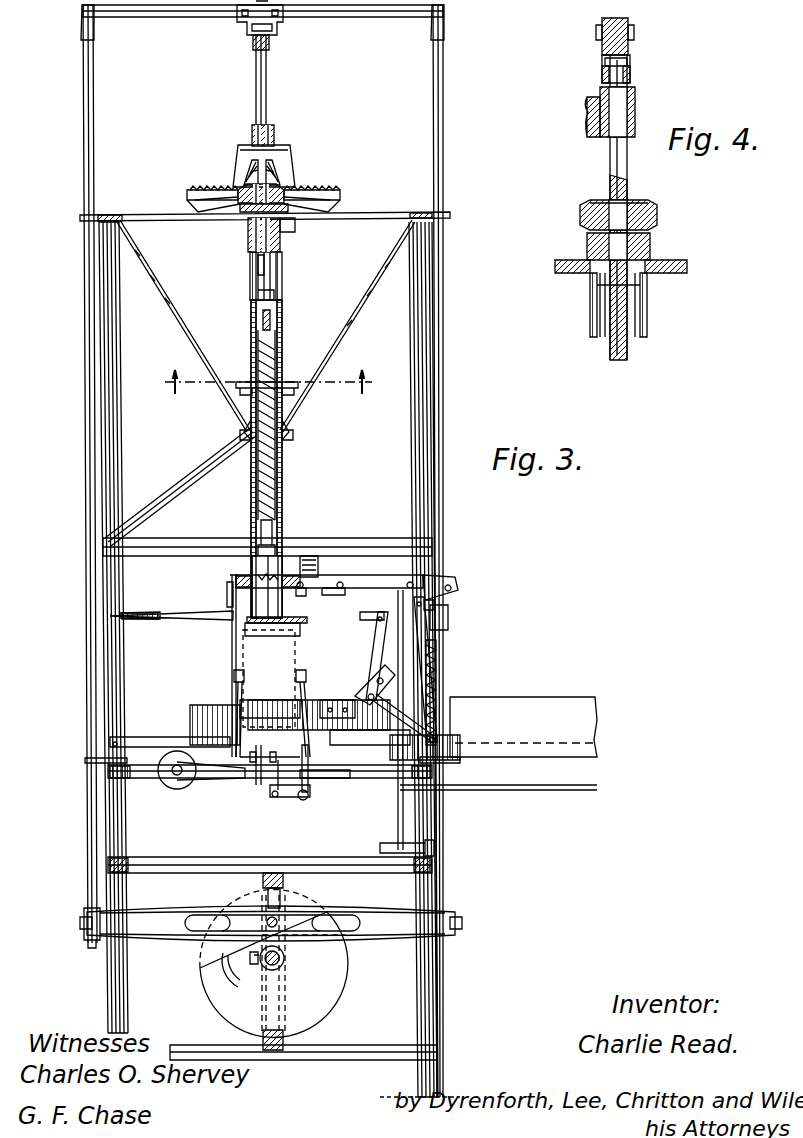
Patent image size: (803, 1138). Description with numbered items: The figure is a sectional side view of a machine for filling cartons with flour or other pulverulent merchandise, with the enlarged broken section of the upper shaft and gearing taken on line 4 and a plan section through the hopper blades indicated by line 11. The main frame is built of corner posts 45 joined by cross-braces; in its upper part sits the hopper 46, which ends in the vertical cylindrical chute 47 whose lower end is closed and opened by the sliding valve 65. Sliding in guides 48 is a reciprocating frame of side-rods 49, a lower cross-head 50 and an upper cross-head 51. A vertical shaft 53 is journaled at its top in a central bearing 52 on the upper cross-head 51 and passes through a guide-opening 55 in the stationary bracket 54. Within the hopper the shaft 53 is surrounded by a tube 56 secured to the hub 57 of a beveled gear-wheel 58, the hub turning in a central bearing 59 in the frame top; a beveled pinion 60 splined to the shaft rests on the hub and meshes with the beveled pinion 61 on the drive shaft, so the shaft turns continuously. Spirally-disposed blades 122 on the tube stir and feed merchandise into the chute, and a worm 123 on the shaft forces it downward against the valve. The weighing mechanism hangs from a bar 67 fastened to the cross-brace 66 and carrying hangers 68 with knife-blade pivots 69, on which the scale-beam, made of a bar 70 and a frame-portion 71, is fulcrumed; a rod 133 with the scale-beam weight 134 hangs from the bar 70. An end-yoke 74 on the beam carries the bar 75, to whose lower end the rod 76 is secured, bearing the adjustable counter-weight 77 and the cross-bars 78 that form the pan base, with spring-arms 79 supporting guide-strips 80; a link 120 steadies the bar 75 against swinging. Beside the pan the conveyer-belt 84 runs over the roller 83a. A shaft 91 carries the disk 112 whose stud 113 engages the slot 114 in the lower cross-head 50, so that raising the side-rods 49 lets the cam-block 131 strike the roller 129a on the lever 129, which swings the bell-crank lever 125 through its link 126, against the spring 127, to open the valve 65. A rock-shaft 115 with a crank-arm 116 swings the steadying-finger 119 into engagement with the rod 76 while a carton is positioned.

In FIG. 3, the section line 4— 4 is at (273, 266).
In FIG. 3, the section line 11 is at (272, 382).
In FIG. 3, the corner posts 45 is at (120, 440).
In FIG. 3, the hopper 46 is at (350, 330).
In FIG. 3, the measuring-receptacle or chute 47 is at (283, 490).
In FIG. 3, the guides 48 is at (80, 217).
In FIG. 3, the side-rods 49 is at (88, 552).
In FIG. 3, the lower cross-head 50 is at (386, 932).
In FIG. 3, the upper cross-head 51 is at (349, 18).
In FIG. 4, the upper cross-head 51 is at (630, 42).
In FIG. 3, the central bearing 52 is at (237, 30).
In FIG. 4, the central bearing 52 is at (600, 48).
In FIG. 3, the vertical shaft 53 is at (270, 78).
In FIG. 4, the vertical shaft 53 is at (606, 152).
In FIG. 3, the stationary bracket 54 is at (288, 166).
In FIG. 3, the guide-opening 55 is at (277, 136).
In FIG. 4, the guide-opening 55 is at (635, 112).
In FIG. 3, the tube 56 is at (283, 298).
In FIG. 4, the tube 56 is at (648, 314).
In FIG. 3, the hub 57 is at (247, 224).
In FIG. 4, the hub 57 is at (590, 262).
In FIG. 3, the beveled gear-wheel 58 is at (340, 191).
In FIG. 3, the central bearing 59 is at (285, 222).
In FIG. 4, the central bearing 59 is at (668, 273).
In FIG. 3, the beveled pinion 60 is at (241, 190).
In FIG. 4, the beveled pinion 60 is at (658, 210).
In FIG. 3, the beveled pinion 61 is at (251, 163).
In FIG. 3, the sliding valve 65 is at (295, 622).
In FIG. 3, the cross-brace 66 is at (178, 557).
In FIG. 3, the bar 67 is at (318, 566).
In FIG. 3, the hangers or brackets 68 is at (398, 586).
In FIG. 3, the knife-blade pivots 69 is at (310, 597).
In FIG. 3, the bar 70 is at (420, 586).
In FIG. 3, the frame-portion 71 is at (330, 589).
In FIG. 3, the end-yoke 74 is at (231, 577).
In FIG. 3, the rod or bar 75 is at (229, 650).
In FIG. 3, the rod or bolt 76 is at (255, 758).
In FIG. 3, the adjustable counter-weight 77 is at (345, 778).
In FIG. 3, the cross-bars 78 is at (283, 755).
In FIG. 3, the springs or spring-arms 79 is at (302, 695).
In FIG. 3, the guide-strips 80 is at (306, 676).
In FIG. 3, the roller 83a is at (173, 784).
In FIG. 3, the conveyer-belt 84 is at (570, 760).
In FIG. 3, the shaft 91 is at (280, 966).
In FIG. 3, the wheel or disk 112 is at (345, 990).
In FIG. 3, the stud or roller 113 is at (277, 920).
In FIG. 3, the longitudinal groove or slot 114 is at (208, 921).
In FIG. 3, the rock-shaft 115 is at (309, 792).
In FIG. 3, the crank-arm 116 is at (272, 797).
In FIG. 3, the steadying-finger 119 is at (279, 790).
In FIG. 3, the link 120 is at (148, 740).
In FIG. 3, the spirally-disposed blades 122 is at (276, 405).
In FIG. 3, the spiral-blade or worm 123 is at (283, 470).
In FIG. 3, the bell-crank lever 125 is at (383, 634).
In FIG. 3, the pivotal link 126 is at (374, 614).
In FIG. 3, the spring 127 is at (440, 706).
In FIG. 3, the lever 129 is at (408, 674).
In FIG. 3, the roller 129a is at (428, 606).
In FIG. 3, the cam-block 131 is at (448, 616).
In FIG. 3, the rod 133 is at (398, 823).
In FIG. 3, the scale-beam weight 134 is at (380, 848).